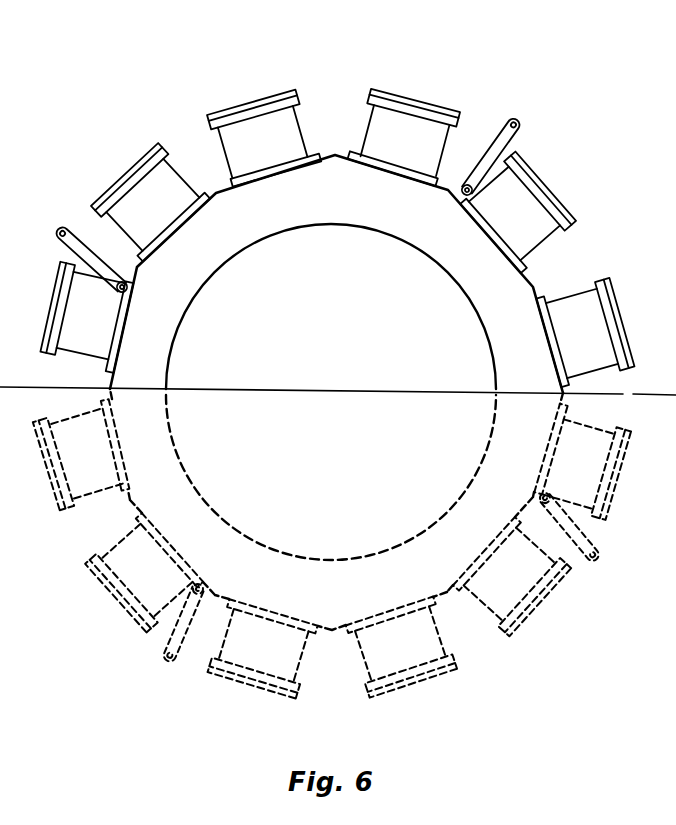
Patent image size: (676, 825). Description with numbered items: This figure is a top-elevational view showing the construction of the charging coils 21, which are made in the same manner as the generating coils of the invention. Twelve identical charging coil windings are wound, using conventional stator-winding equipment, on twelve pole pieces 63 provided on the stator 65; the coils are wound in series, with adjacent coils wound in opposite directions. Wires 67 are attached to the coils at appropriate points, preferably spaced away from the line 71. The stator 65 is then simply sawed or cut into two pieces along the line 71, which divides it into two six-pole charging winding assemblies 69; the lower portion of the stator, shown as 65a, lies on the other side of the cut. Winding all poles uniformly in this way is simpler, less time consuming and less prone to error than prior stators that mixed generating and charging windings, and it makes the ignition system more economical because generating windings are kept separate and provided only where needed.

The charging coils 21 is at (339, 389).
The pole pieces 63 is at (550, 188).
The stator 65 is at (388, 227).
The core circle lower half 65a is at (367, 556).
The wires 67 is at (510, 132).
The six-pole charging winding assemblies 69 is at (338, 85).
The line 71 is at (633, 395).